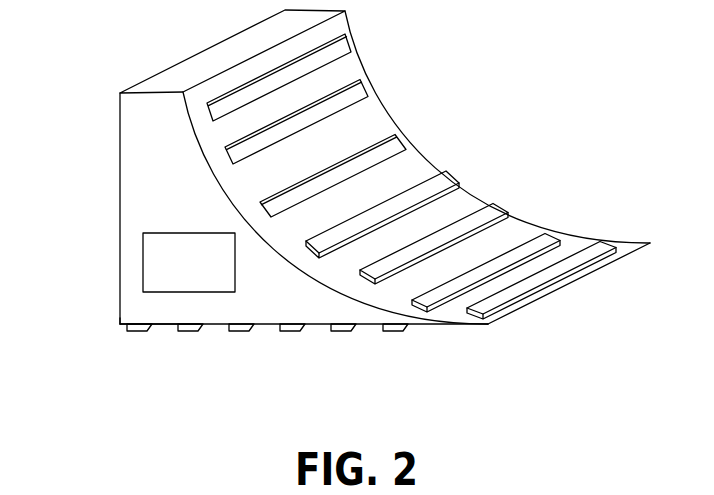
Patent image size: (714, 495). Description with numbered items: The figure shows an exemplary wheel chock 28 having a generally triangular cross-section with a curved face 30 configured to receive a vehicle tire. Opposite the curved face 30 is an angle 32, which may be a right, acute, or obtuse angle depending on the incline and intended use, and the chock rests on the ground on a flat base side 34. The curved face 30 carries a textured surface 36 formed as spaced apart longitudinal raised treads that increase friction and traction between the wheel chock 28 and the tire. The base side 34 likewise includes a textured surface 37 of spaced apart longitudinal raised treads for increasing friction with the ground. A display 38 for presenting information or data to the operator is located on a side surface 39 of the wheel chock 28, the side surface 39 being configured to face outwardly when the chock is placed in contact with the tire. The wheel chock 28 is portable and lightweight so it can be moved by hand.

The wheel chock 28 is at (92, 62).
The curved face 30 is at (453, 202).
The angle 32 is at (132, 312).
The base side 34 is at (193, 365).
The textured surface 36 is at (356, 97).
The textured surface 37 is at (393, 332).
The display 38 is at (147, 272).
The side surface 39 is at (132, 213).